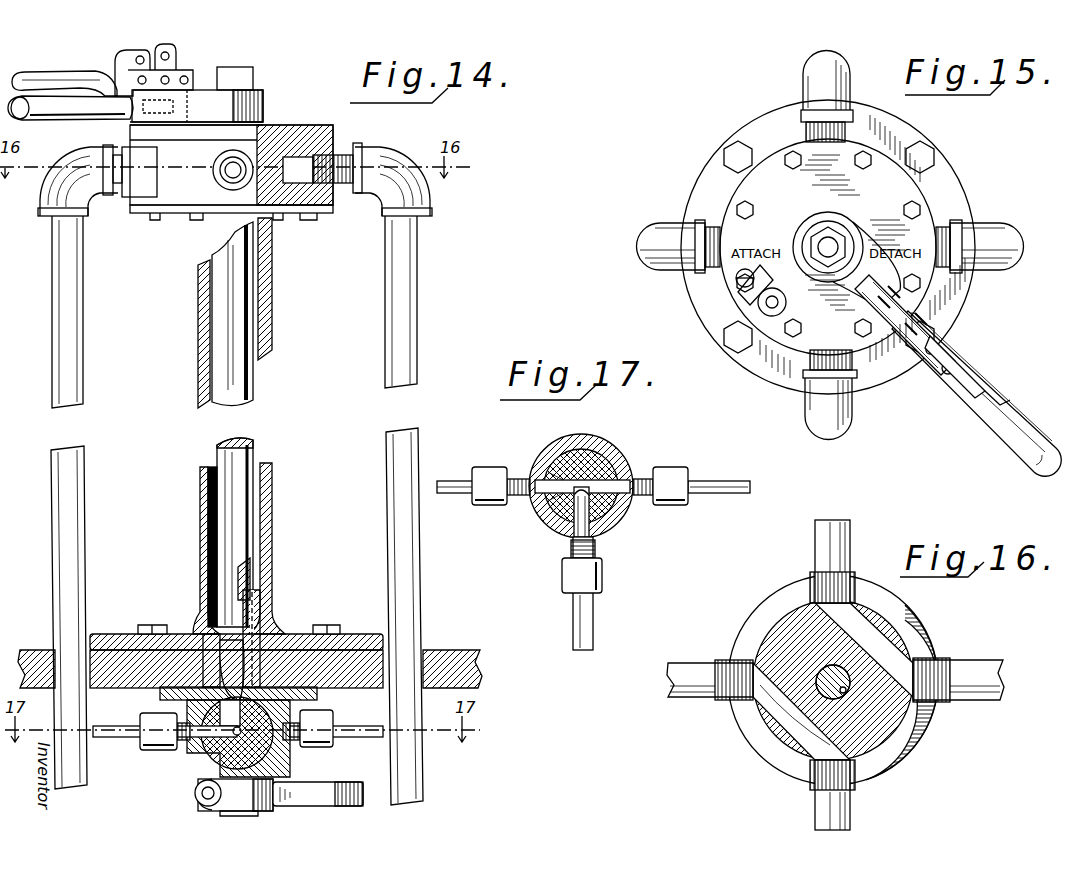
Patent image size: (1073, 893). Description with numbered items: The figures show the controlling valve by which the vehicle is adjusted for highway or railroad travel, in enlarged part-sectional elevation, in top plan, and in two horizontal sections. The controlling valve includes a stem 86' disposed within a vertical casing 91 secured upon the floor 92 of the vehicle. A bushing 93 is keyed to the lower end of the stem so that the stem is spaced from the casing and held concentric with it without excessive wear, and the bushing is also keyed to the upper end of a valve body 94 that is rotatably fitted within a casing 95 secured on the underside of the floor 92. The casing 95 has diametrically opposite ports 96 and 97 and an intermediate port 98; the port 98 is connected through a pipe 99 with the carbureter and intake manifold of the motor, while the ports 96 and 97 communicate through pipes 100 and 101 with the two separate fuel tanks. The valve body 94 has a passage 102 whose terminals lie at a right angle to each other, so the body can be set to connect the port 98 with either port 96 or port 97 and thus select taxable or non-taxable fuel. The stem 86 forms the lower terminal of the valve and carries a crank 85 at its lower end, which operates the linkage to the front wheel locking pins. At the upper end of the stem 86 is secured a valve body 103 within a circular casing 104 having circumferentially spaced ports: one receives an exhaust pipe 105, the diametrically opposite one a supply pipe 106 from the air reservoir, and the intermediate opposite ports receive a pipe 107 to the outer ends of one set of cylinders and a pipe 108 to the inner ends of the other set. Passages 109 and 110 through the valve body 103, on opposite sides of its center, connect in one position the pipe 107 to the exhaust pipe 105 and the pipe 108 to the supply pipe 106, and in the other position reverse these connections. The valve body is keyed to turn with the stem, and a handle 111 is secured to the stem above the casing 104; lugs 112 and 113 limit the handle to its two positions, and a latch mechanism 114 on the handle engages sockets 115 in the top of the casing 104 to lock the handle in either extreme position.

In FIG. 14, the crank 85 is at (320, 800).
In FIG. 14, the stem 86 is at (215, 797).
In FIG. 14, the stem 86' is at (204, 532).
In FIG. 16, the stem 86' is at (859, 682).
In FIG. 14, the vertical casing 91 is at (274, 514).
In FIG. 14, the floor 92 is at (450, 648).
In FIG. 14, the bushing 93 is at (262, 607).
In FIG. 14, the valve body 94 is at (200, 752).
In FIG. 17, the valve body 94 is at (603, 445).
In FIG. 14, the casing 95 is at (283, 760).
In FIG. 17, the casing 95 is at (612, 523).
In FIG. 14, the port 96 is at (160, 723).
In FIG. 17, the port 96 is at (510, 468).
In FIG. 14, the port 97 is at (305, 722).
In FIG. 17, the port 97 is at (633, 468).
In FIG. 17, the intermediate port 98 is at (570, 535).
In FIG. 17, the pipe 99 is at (593, 618).
In FIG. 14, the pipe 100 is at (105, 730).
In FIG. 17, the pipe 100 is at (447, 496).
In FIG. 14, the pipe 101 is at (350, 731).
In FIG. 17, the pipe 101 is at (725, 496).
In FIG. 14, the passage 102 is at (234, 700).
In FIG. 17, the passage 102 is at (552, 500).
In FIG. 14, the valve body 103 is at (277, 138).
In FIG. 16, the valve body 103 is at (920, 735).
In FIG. 14, the circular casing 104 is at (340, 143).
In FIG. 15, the circular casing 104 is at (905, 185).
In FIG. 16, the circular casing 104 is at (912, 635).
In FIG. 14, the exhaust pipe 105 is at (212, 173).
In FIG. 15, the exhaust pipe 105 is at (806, 400).
In FIG. 16, the exhaust pipe 105 is at (818, 804).
In FIG. 15, the supply pipe 106 is at (806, 80).
In FIG. 16, the supply pipe 106 is at (815, 554).
In FIG. 14, the pipe 107 is at (58, 268).
In FIG. 15, the pipe 107 is at (655, 258).
In FIG. 16, the pipe 107 is at (682, 663).
In FIG. 14, the pipe 108 is at (410, 247).
In FIG. 15, the pipe 108 is at (990, 224).
In FIG. 16, the pipe 108 is at (990, 700).
In FIG. 16, the passage 109 is at (790, 712).
In FIG. 16, the passage 110 is at (870, 625).
In FIG. 14, the handle 111 is at (68, 112).
In FIG. 15, the handle 111 is at (962, 370).
In FIG. 15, the lug 112 is at (740, 292).
In FIG. 15, the lug 113 is at (925, 290).
In FIG. 14, the latch mechanism 114 is at (70, 78).
In FIG. 15, the latch mechanism 114 is at (965, 390).
In FIG. 15, the sockets 115 is at (786, 304).